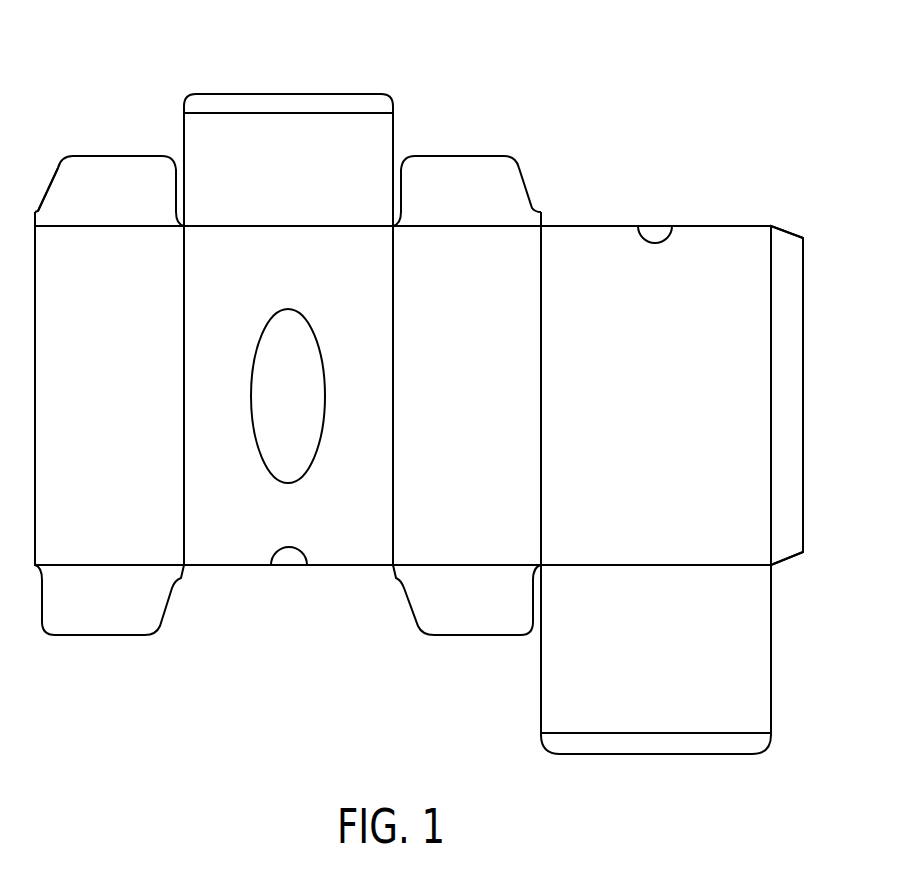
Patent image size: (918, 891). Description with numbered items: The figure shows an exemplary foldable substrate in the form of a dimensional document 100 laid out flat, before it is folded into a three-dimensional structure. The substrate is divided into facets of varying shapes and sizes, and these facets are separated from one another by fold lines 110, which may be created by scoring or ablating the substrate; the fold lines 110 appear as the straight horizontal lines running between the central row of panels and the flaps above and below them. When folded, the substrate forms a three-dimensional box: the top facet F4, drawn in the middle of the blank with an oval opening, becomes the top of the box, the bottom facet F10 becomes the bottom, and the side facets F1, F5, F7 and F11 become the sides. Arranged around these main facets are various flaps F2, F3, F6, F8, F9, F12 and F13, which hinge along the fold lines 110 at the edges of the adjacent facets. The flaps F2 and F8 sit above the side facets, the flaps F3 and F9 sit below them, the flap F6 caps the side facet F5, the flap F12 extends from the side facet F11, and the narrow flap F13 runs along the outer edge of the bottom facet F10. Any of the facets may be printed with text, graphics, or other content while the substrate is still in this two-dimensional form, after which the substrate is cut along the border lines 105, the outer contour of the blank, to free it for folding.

The dimensional document 100 is at (84, 72).
The border lines 105 is at (53, 185).
The fold lines 110 is at (79, 563).
The side facet F1 is at (109, 395).
The flap F2 is at (109, 205).
The flap F3 is at (109, 589).
The top facet F4 is at (288, 395).
The side facet F5 is at (288, 169).
The flap F6 is at (286, 103).
The side facet F7 is at (467, 395).
The flap F8 is at (467, 205).
The flap F9 is at (467, 589).
The bottom facet F10 is at (656, 395).
The side facet F11 is at (656, 649).
The flap F12 is at (655, 743).
The flap F13 is at (791, 246).